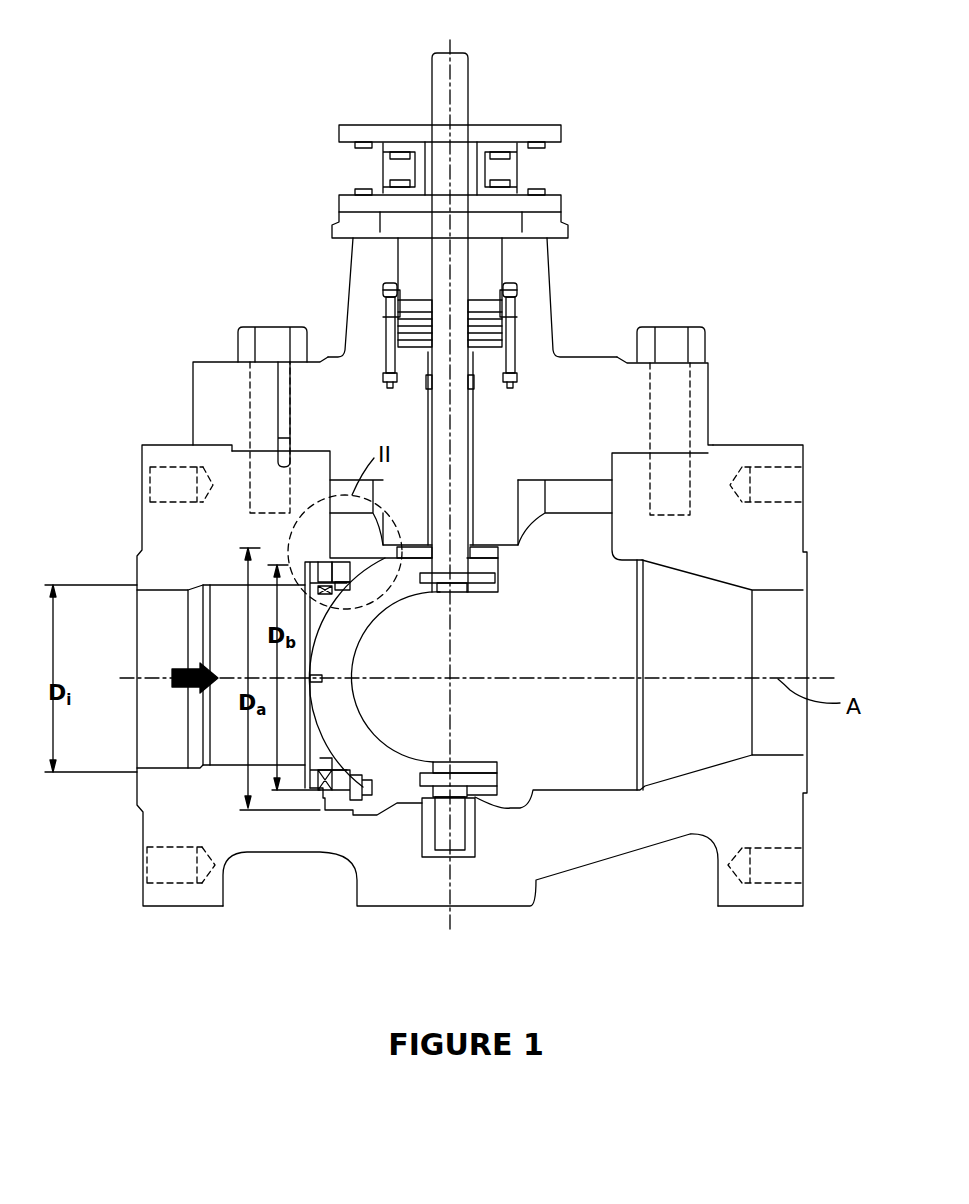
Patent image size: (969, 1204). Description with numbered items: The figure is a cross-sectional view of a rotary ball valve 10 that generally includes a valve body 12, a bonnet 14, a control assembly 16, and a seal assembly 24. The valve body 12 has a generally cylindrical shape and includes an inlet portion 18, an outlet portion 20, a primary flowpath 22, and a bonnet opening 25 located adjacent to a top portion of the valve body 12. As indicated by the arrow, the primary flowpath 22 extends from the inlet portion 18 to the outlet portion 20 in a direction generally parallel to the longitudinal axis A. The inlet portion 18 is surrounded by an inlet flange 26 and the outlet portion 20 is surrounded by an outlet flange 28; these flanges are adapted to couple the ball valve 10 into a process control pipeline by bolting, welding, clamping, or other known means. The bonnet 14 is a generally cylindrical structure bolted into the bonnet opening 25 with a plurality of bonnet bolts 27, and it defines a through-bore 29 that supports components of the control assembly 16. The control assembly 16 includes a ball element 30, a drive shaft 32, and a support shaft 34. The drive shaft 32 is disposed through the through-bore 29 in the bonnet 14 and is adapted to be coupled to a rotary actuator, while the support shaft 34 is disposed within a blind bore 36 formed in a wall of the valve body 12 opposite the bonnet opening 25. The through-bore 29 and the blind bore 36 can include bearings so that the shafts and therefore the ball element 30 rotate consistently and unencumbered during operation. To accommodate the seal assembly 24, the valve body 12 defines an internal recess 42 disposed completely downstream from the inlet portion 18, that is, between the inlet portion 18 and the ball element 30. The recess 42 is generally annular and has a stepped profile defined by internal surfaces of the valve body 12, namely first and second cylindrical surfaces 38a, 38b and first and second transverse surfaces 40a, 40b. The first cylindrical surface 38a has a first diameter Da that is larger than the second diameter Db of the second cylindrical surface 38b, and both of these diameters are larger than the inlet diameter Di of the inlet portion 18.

The rotary ball valve 10 is at (592, 134).
The valve body 12 is at (158, 442).
The bonnet 14 is at (577, 354).
The control assembly 16 is at (468, 78).
The inlet portion 18 is at (150, 752).
The outlet portion 20 is at (778, 650).
The primary flowpath 22 is at (172, 668).
The seal assembly 24 is at (360, 777).
The bonnet opening 25 is at (610, 492).
The inlet flange 26 is at (190, 546).
The bonnet bolts 27 is at (272, 332).
The outlet flange 28 is at (790, 522).
The through-bore 29 is at (474, 430).
The ball element 30 is at (394, 596).
The drive shaft 32 is at (445, 155).
The support shaft 34 is at (460, 830).
The blind bore 36 is at (462, 860).
The first cylindrical surface 38a is at (366, 607).
The second cylindrical surface 38b is at (323, 605).
The first transverse surface 40a is at (347, 568).
The second transverse surface 40b is at (313, 568).
The internal recess 42 is at (328, 767).